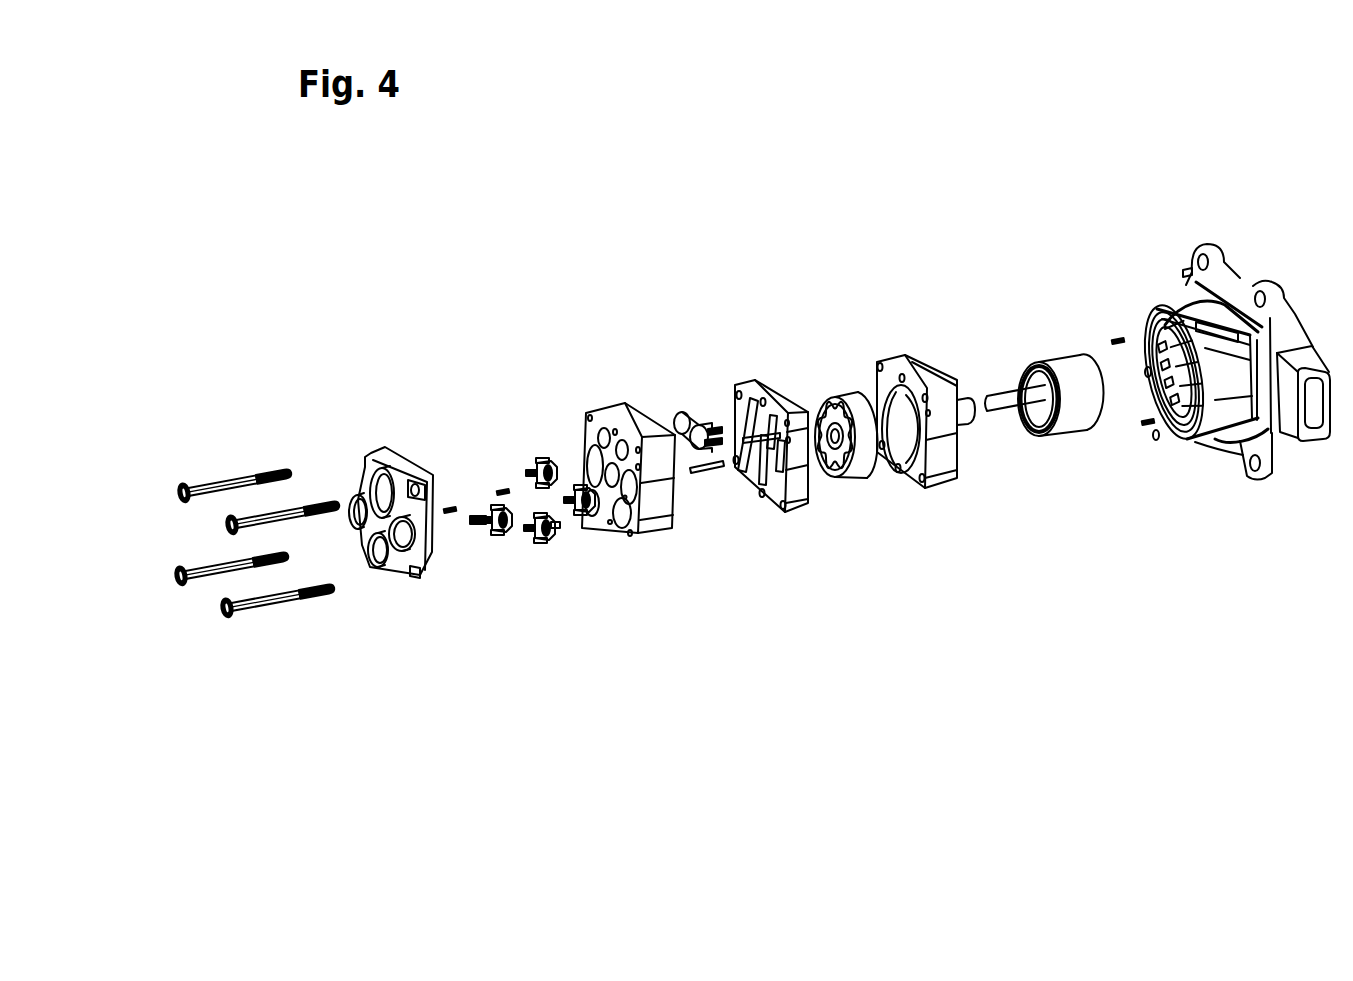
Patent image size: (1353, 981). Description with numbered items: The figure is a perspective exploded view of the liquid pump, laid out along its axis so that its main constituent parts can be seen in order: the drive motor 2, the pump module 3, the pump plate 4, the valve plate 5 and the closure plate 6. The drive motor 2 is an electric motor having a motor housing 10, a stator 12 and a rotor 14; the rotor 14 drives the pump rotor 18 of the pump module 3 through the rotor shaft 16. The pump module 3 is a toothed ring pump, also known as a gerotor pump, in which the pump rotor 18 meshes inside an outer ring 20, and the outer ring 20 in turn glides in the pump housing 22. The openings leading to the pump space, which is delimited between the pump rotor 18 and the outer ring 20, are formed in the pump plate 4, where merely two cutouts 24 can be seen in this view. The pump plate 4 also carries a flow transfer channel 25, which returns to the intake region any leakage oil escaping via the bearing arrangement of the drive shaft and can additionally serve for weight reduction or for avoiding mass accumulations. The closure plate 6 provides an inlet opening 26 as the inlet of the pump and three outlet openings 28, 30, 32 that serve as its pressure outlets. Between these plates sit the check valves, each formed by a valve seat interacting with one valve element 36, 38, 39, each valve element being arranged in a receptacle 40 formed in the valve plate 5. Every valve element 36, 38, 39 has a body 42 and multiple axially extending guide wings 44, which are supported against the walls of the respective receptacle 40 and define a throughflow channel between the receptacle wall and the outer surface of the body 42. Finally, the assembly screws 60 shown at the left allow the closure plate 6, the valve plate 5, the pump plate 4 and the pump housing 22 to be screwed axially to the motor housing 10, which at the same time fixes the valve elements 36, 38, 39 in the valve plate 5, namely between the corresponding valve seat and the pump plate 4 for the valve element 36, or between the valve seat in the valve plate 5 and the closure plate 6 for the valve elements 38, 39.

The drive motor 2 is at (1157, 359).
The pump module 3 is at (881, 428).
The pump plate 4 is at (745, 447).
The valve plate 5 is at (628, 509).
The closure plate 6 is at (391, 526).
The motor housing 10 is at (1287, 313).
The stator 12 is at (1163, 420).
The rotor 14 is at (1078, 417).
The rotor shaft 16 is at (1007, 413).
The pump rotor 18 is at (820, 407).
The outer ring 20 is at (852, 400).
The pump housing 22 is at (902, 360).
The cutouts 24 is at (740, 412).
The flow transfer channel 25 is at (760, 500).
The inlet opening 26 is at (381, 483).
The outlet opening 28 is at (428, 548).
The outlet opening 30 is at (373, 560).
The outlet opening 32 is at (352, 500).
The valve element 36 is at (683, 446).
The valve element 38 is at (559, 499).
The valve element 39 is at (481, 516).
The receptacle 40 is at (618, 522).
The body 42 is at (561, 527).
The guide wings 44 is at (539, 548).
The assembly screws 60 is at (247, 520).